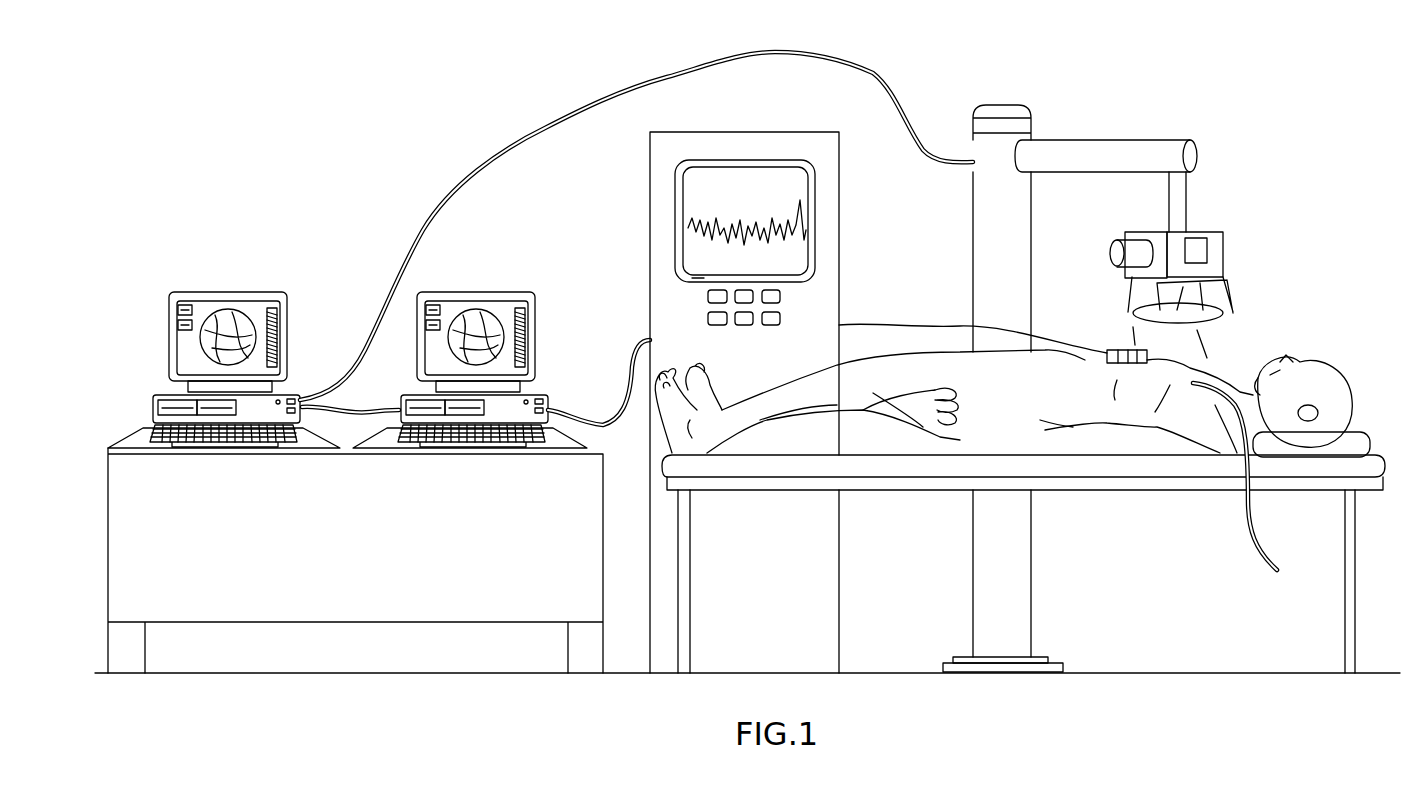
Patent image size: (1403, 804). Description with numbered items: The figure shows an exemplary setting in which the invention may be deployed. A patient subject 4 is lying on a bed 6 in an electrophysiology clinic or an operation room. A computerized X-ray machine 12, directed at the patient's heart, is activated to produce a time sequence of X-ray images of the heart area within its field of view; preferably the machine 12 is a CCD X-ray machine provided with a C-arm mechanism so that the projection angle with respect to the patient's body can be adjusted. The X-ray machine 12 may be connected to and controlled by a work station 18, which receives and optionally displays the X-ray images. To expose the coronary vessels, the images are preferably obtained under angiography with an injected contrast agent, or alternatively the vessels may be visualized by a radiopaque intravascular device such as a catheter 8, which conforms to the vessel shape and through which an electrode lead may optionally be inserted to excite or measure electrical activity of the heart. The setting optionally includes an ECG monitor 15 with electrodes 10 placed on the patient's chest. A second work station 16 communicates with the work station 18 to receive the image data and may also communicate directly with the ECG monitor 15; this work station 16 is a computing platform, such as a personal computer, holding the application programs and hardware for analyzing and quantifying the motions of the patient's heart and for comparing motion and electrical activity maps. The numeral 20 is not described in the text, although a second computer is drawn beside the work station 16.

The patient subject 4 is at (1347, 380).
The bed 6 is at (1133, 485).
The catheter 8 is at (1197, 380).
The electrodes 10 is at (1130, 348).
The computerized X-ray machine 12 is at (1153, 232).
The ECG monitor 15 is at (780, 132).
The work station 16 is at (475, 292).
The work station 18 is at (636, 226).
The computer 20 is at (228, 292).